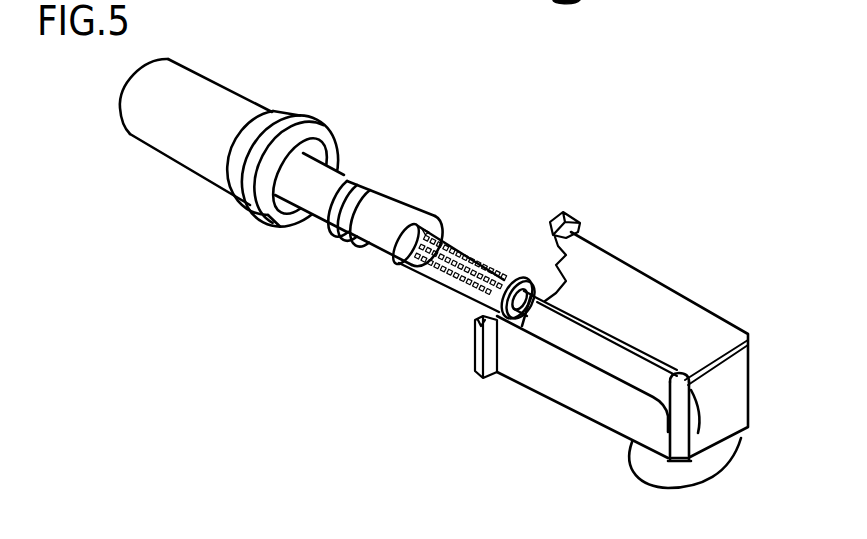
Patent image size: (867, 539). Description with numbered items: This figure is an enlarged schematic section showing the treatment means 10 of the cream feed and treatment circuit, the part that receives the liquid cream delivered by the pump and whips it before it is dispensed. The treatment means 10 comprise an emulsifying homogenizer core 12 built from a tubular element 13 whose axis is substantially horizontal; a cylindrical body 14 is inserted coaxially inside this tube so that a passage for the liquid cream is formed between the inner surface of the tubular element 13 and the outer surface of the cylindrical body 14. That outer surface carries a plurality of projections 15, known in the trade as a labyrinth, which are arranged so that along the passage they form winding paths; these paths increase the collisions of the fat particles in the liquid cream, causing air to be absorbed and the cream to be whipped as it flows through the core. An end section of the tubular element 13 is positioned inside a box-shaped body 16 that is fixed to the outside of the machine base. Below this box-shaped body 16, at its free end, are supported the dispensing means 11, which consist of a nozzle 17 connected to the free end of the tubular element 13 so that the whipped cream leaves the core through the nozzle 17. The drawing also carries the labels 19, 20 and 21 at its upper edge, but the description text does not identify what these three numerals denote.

The treatment means 10 is at (453, 237).
The dispensing means 11 is at (636, 452).
The emulsifying homogenizer core 12 is at (468, 239).
The tubular element 13 is at (305, 156).
The cylindrical body 14 is at (496, 262).
The projections 15 is at (455, 283).
The box-shaped body 16 is at (613, 250).
The nozzle 17 is at (720, 456).
The connector 19 is at (530, 0).
The cable 20 is at (400, 4).
The fitting 21 is at (705, 4).